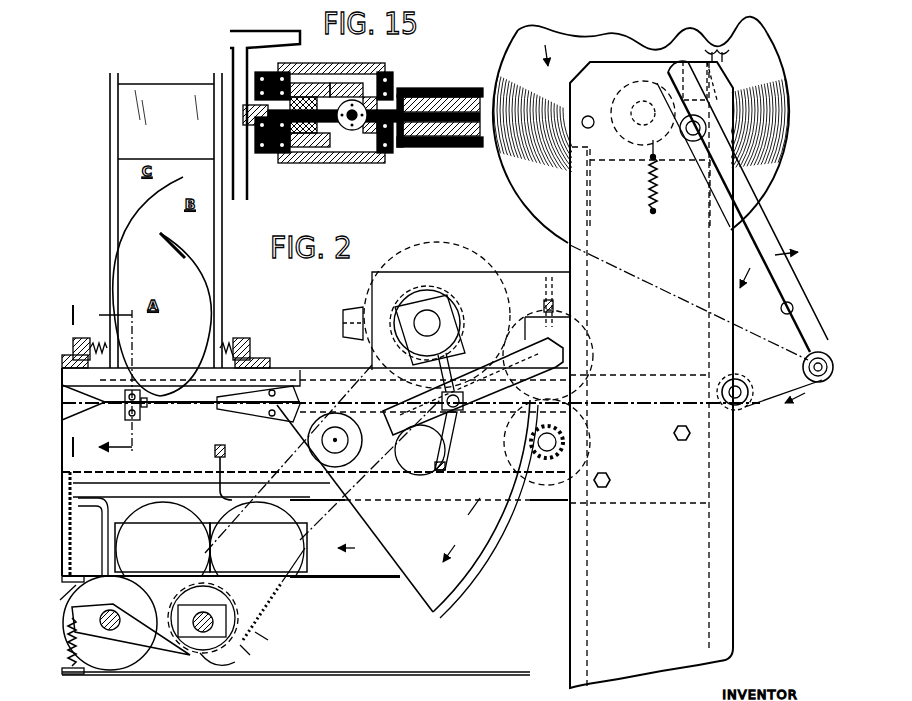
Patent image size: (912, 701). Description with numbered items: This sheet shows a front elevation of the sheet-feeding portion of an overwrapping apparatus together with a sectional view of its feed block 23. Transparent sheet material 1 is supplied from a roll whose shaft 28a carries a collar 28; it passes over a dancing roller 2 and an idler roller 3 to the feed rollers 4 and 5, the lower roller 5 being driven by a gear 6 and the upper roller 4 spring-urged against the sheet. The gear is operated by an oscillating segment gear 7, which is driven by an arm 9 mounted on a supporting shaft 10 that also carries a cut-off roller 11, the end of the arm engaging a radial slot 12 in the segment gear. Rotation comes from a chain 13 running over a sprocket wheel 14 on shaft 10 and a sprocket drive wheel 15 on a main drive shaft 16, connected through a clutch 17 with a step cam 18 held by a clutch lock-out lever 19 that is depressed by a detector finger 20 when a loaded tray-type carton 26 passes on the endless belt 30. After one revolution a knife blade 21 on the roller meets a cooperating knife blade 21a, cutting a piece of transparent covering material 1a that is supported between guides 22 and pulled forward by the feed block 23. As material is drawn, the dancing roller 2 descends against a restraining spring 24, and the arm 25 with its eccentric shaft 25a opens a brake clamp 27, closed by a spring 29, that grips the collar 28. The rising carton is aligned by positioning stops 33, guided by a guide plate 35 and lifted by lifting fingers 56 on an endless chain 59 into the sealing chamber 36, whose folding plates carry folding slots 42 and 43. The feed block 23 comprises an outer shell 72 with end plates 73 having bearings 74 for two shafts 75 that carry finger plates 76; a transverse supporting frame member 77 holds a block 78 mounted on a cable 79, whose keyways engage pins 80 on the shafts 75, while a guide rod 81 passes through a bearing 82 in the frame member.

In FIG. 2, the transparent sheet material 1 is at (672, 292).
In FIG. 2, the piece of transparent covering material 1a is at (205, 410).
In FIG. 2, the dancing roller 2 is at (804, 368).
In FIG. 2, the idler roller 3 is at (740, 380).
In FIG. 2, the upper feed roller 4 is at (580, 335).
In FIG. 2, the lower feed roller 5 is at (588, 446).
In FIG. 2, the gear 6 is at (542, 476).
In FIG. 2, the segment gear 7 is at (470, 578).
In FIG. 2, the arm 9 is at (460, 358).
In FIG. 2, the supporting shaft 10 is at (445, 312).
In FIG. 2, the cut-off roller 11 is at (484, 260).
In FIG. 2, the radial slot 12 is at (362, 445).
In FIG. 2, the chain 13 is at (278, 594).
In FIG. 2, the sprocket wheel 14 is at (400, 343).
In FIG. 2, the sprocket drive wheel 15 is at (215, 596).
In FIG. 2, the main drive shaft 16 is at (210, 655).
In FIG. 2, the clutch 17 is at (226, 618).
In FIG. 2, the step cam 18 is at (247, 638).
In FIG. 2, the clutch lock-out lever 19 is at (150, 625).
In FIG. 2, the detector finger 20 is at (203, 618).
In FIG. 2, the knife blade 21 is at (343, 318).
In FIG. 2, the cooperating knife blade 21a is at (432, 438).
In FIG. 2, the guides 22 is at (245, 410).
In FIG. 15, the feed block 23 is at (296, 189).
In FIG. 2, the feed block 23 is at (140, 418).
In FIG. 2, the restraining spring 24 is at (650, 200).
In FIG. 2, the arm 25 is at (778, 240).
In FIG. 2, the eccentric shaft 25a is at (654, 156).
In FIG. 2, the loaded tray-type carton 26 is at (211, 549).
In FIG. 2, the brake clamp 27 is at (706, 92).
In FIG. 2, the collar 28 is at (640, 95).
In FIG. 2, the shaft 28a is at (641, 184).
In FIG. 2, the spring 29 is at (715, 64).
In FIG. 2, the endless belt 30 is at (350, 578).
In FIG. 2, the positioning stops 33 is at (110, 520).
In FIG. 2, the guide plate 35 is at (215, 450).
In FIG. 2, the sealing chamber 36 is at (110, 240).
In FIG. 2, the folding slot 42 is at (183, 256).
In FIG. 2, the folding slot 43 is at (150, 210).
In FIG. 2, the lifting fingers 56 is at (72, 580).
In FIG. 2, the endless chain 59 is at (74, 530).
In FIG. 15, the outer shell 72 is at (325, 64).
In FIG. 15, the end plates 73 is at (272, 75).
In FIG. 15, the bearings 74 is at (396, 148).
In FIG. 15, the shafts 75 is at (445, 95).
In FIG. 15, the finger plates 76 is at (485, 88).
In FIG. 15, the transverse supporting frame member 77 is at (352, 100).
In FIG. 15, the block 78 is at (305, 147).
In FIG. 15, the cable 79 is at (258, 153).
In FIG. 2, the cable 79 is at (150, 472).
In FIG. 15, the pins 80 is at (300, 70).
In FIG. 15, the guide rod 81 is at (372, 90).
In FIG. 15, the bearing 82 is at (370, 160).